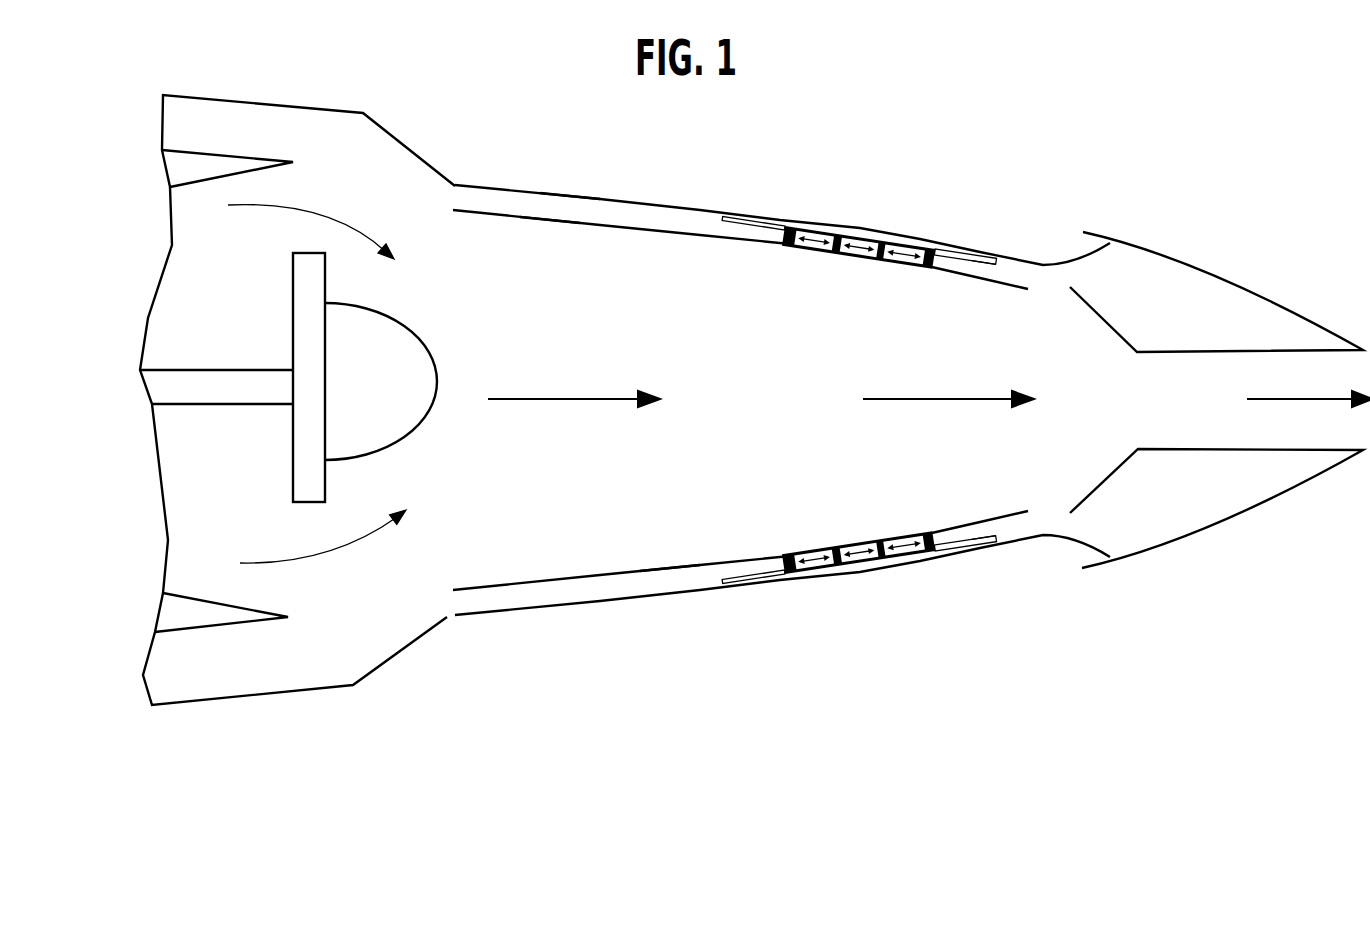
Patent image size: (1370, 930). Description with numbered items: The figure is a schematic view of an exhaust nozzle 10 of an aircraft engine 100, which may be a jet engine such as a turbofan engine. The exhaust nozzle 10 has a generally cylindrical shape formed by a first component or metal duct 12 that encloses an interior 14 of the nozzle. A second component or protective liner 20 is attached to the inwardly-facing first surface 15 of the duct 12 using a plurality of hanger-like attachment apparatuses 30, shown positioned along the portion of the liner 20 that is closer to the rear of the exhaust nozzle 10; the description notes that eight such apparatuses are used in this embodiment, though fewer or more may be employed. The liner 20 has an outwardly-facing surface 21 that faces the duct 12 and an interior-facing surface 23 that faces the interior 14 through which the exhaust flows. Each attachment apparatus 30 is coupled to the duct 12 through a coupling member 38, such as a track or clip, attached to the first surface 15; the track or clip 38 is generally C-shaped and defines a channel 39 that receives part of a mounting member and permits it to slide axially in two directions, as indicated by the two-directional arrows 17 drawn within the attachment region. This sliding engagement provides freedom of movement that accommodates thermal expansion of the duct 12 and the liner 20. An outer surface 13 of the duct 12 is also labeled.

The aircraft engine 100 is at (323, 147).
The exhaust nozzle 10 is at (506, 130).
The first component or metal duct 12 is at (630, 185).
The outer surface 13 is at (563, 195).
The interior 14 is at (773, 347).
The first surface 15 is at (681, 214).
The two-directional arrows 17 is at (817, 242).
The second component or protective liner 20 is at (547, 245).
The outwardly-facing surface 21 is at (638, 226).
The interior-facing surface 23 is at (596, 227).
The attachment apparatus 30 is at (854, 387).
The coupling member 38 is at (977, 257).
The channel 39 is at (992, 251).